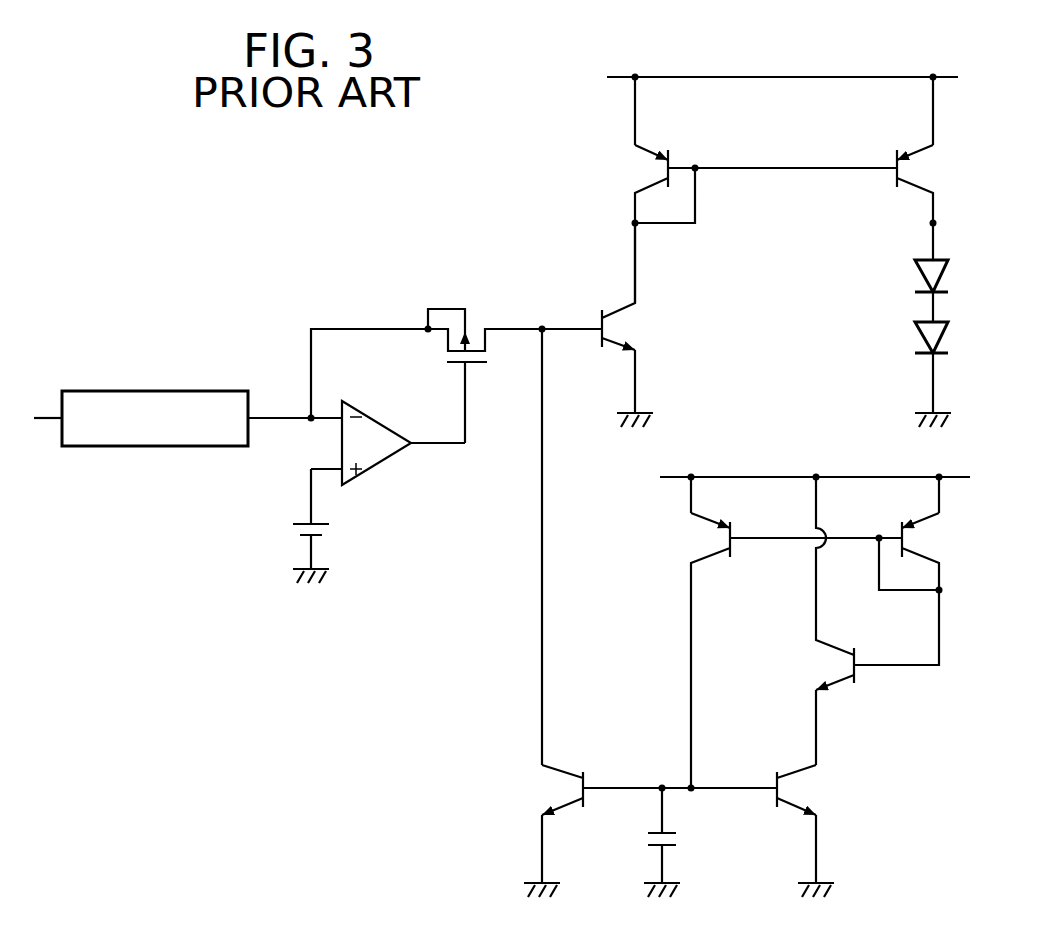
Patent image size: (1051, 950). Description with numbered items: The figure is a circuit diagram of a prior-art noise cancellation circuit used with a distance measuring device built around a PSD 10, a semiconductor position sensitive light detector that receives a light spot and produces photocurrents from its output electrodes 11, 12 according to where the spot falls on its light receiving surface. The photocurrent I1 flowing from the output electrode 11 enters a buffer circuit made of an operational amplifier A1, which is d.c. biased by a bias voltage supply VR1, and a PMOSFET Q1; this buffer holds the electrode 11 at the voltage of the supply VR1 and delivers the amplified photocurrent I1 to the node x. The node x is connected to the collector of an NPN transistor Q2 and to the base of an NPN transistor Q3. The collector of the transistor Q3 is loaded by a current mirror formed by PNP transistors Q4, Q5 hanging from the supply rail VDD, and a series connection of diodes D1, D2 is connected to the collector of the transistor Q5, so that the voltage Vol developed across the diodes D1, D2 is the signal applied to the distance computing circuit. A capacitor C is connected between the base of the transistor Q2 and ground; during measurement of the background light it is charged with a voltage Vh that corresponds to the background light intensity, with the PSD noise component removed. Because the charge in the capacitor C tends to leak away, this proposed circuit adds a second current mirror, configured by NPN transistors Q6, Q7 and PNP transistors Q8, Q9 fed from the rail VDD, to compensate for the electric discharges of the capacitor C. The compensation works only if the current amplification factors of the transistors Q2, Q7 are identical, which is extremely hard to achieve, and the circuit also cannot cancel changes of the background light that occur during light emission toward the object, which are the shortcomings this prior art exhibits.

The PSD 10 is at (170, 388).
The output electrode 11 is at (272, 412).
The output electrode 12 is at (45, 417).
The photocurrent I1 is at (300, 431).
The operational amplifier A1 is at (375, 415).
The bias voltage supply VR1 is at (339, 526).
The PMOSFET Q1 is at (474, 318).
The node x is at (542, 326).
The NPN transistor Q2 is at (540, 789).
The NPN transistor Q3 is at (632, 328).
The PNP transistor Q4 is at (634, 149).
The PNP transistor Q5 is at (928, 161).
The NPN transistor Q6 is at (822, 662).
The NPN transistor Q7 is at (812, 787).
The PNP transistor Q8 is at (693, 535).
The PNP transistor Q9 is at (932, 537).
The diode D1 is at (947, 265).
The diode D2 is at (947, 330).
The capacitor C is at (674, 838).
The voltage Vh is at (626, 786).
The voltage Vol is at (933, 223).
The supply voltage VDD is at (819, 282).